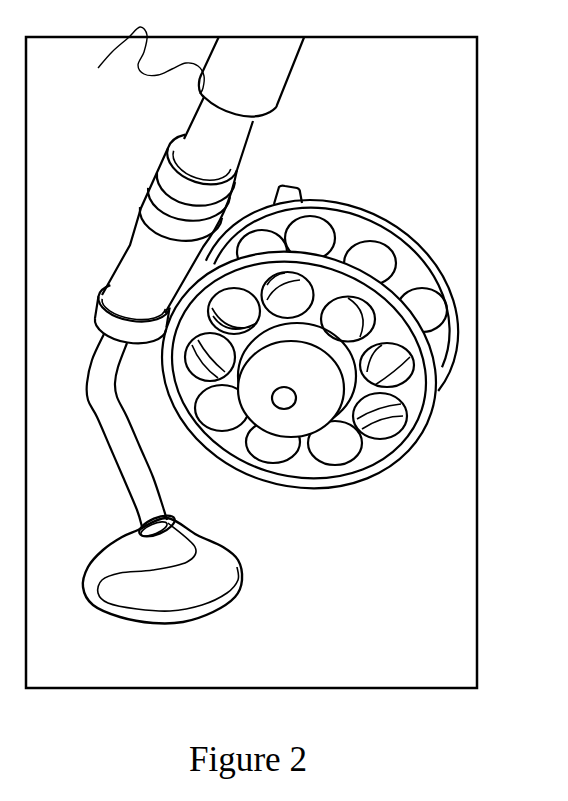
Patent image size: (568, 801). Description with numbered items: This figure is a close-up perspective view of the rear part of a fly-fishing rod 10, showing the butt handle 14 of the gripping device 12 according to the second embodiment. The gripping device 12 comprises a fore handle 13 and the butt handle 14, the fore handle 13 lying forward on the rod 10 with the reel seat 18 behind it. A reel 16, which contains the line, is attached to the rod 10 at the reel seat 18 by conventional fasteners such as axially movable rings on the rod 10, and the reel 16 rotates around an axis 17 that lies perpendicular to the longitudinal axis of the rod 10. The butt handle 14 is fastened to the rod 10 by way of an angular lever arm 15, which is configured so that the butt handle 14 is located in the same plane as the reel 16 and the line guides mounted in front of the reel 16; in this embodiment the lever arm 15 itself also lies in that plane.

The fishing rod 10 is at (188, 167).
The gripping device 12 is at (138, 60).
The fore handle 13 is at (300, 55).
The butt handle 14 is at (212, 569).
The lever arm 15 is at (145, 506).
The reel 16 is at (428, 405).
The axis 17 is at (288, 402).
The reel seat 18 is at (100, 298).